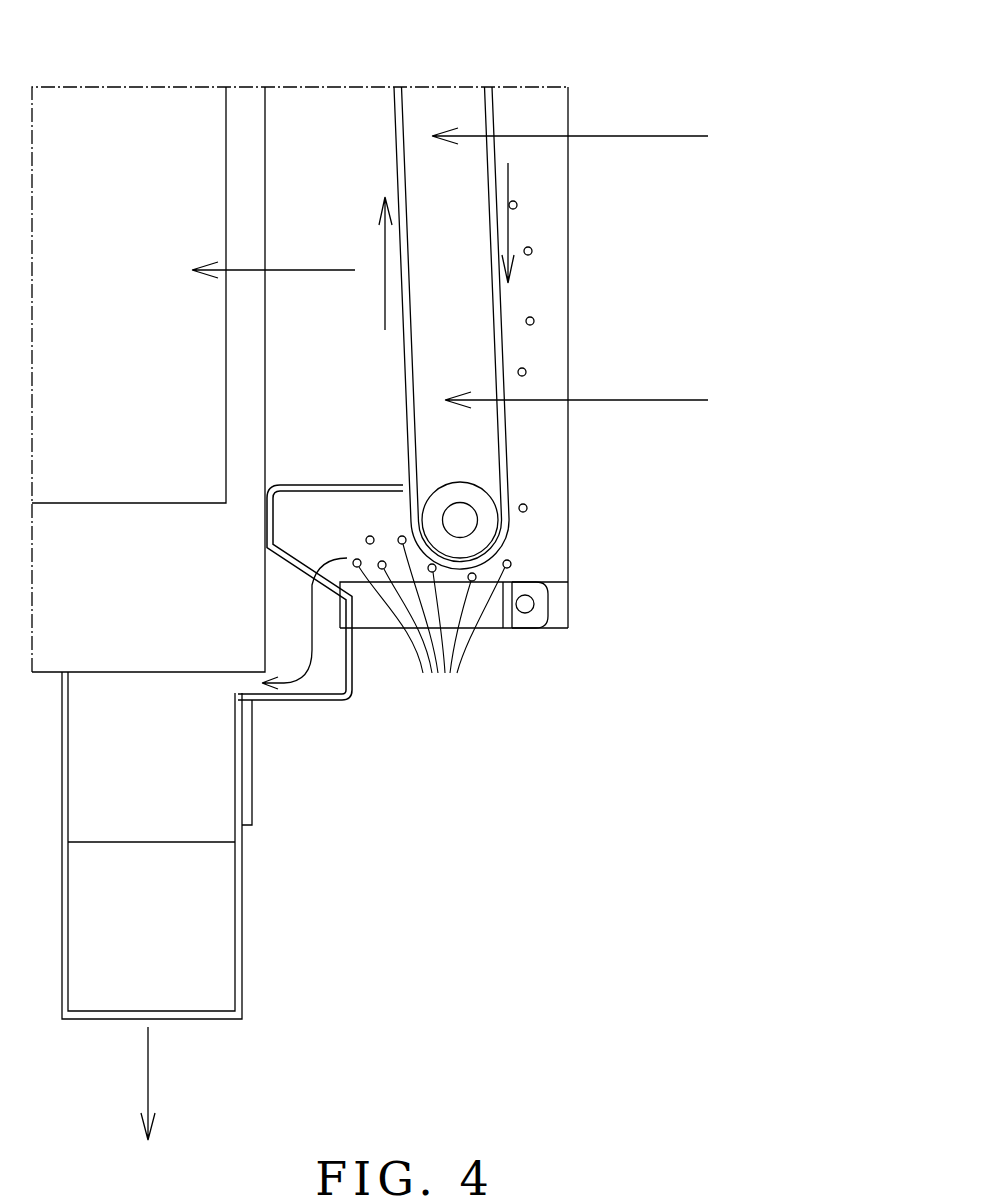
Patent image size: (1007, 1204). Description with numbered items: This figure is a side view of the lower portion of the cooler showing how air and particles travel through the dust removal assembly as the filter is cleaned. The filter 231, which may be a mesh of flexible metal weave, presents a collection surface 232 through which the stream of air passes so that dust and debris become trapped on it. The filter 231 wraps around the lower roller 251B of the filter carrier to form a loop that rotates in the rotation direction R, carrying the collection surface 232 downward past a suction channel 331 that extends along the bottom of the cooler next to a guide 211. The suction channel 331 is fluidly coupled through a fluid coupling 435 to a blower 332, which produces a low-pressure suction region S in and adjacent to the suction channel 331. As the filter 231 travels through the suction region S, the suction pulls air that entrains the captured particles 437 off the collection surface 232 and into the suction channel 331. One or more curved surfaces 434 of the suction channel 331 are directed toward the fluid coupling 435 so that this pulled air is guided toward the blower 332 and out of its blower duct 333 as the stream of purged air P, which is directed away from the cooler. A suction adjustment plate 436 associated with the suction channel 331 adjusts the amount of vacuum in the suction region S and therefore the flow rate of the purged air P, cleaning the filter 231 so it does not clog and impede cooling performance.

The conveyance guide 211 is at (265, 167).
The filter 231 is at (396, 163).
The collection surface 232 is at (403, 355).
The roller 251B is at (483, 512).
The suction channel 331 is at (328, 480).
The blower 332 is at (259, 783).
The blower duct 333 is at (212, 942).
The curved surface 434 is at (322, 540).
The fluid coupling 435 is at (362, 699).
The suction adjustment plate 436 is at (552, 604).
The particles 437 is at (532, 254).
The rotation direction R is at (390, 259).
The suction region S is at (403, 515).
The stream of purged air P is at (150, 1085).